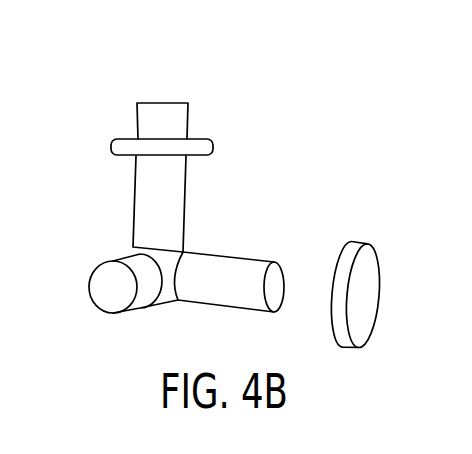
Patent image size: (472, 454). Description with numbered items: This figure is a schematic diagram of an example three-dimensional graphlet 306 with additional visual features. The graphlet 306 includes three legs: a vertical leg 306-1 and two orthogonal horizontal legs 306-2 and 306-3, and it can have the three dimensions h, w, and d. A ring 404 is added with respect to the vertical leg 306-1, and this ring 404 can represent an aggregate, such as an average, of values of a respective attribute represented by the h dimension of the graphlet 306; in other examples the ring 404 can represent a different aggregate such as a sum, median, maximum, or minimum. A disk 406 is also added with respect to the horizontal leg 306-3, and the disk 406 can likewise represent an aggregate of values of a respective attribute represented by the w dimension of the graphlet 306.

The 3D graphlet 306 is at (191, 87).
The vertical leg 306-1 is at (134, 199).
The horizontal leg 306-2 is at (121, 256).
The horizontal leg 306-3 is at (235, 253).
The ring 404 is at (197, 138).
The disk 406 is at (362, 242).